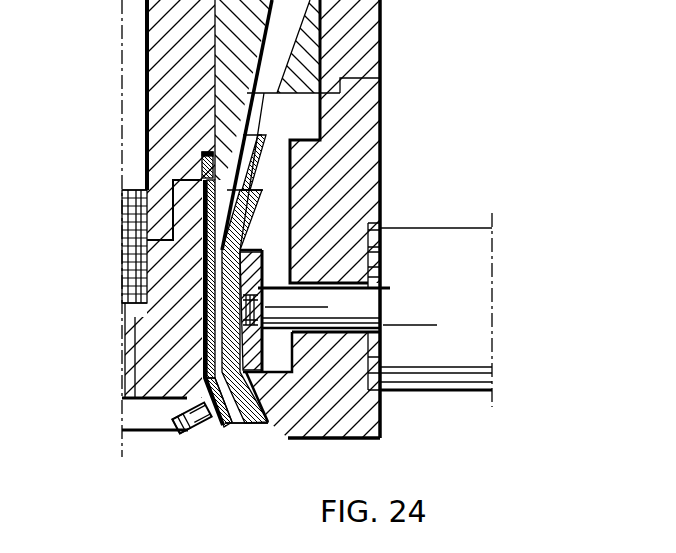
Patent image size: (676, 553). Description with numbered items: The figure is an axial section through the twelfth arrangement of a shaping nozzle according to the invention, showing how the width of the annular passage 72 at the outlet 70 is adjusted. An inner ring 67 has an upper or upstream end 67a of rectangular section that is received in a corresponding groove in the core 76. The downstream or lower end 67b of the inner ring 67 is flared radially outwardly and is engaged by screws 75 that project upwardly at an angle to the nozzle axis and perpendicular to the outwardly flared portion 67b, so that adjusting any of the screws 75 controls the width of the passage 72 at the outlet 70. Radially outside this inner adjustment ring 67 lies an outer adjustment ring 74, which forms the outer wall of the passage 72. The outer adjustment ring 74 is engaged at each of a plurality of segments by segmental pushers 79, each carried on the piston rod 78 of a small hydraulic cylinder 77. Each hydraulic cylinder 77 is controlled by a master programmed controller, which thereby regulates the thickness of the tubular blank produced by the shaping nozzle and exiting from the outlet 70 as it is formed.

The core 76 is at (182, 61).
The inner ring 67 is at (205, 345).
The upper or upstream end 67a is at (200, 165).
The downstream or lower end 67b is at (220, 430).
The outlet 70 is at (243, 430).
The passage 72 is at (250, 396).
The outer adjustment ring 74 is at (258, 260).
The screws 75 is at (176, 416).
The hydraulic cylinder 77 is at (475, 268).
The piston rod 78 is at (362, 304).
The segmental pushers 79 is at (470, 355).